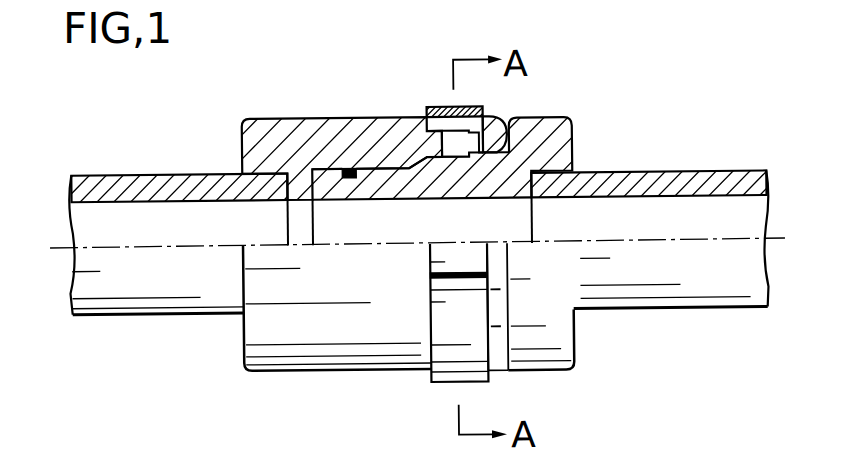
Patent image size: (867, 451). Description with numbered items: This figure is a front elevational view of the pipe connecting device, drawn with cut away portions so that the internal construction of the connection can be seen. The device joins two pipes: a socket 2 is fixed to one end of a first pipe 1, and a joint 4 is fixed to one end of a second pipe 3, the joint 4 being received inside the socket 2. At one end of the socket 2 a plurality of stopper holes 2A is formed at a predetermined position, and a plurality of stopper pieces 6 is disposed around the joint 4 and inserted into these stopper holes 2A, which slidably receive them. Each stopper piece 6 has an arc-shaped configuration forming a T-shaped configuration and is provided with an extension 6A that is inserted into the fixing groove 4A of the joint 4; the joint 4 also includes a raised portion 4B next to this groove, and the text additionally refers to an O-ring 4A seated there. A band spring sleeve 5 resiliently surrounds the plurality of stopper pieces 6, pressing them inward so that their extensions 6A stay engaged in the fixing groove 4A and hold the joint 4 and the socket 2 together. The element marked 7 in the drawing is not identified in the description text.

The first pipe 1 is at (158, 182).
The socket 2 is at (265, 135).
The stopper holes 2A is at (495, 106).
The second pipe 3 is at (715, 183).
The joint 4 is at (553, 134).
The fixing groove 4A is at (573, 156).
The raised portion 4B is at (433, 140).
The band spring sleeve 5 is at (443, 110).
The stopper pieces 6 is at (443, 123).
The extension 6A is at (448, 147).
The seal ring 7 is at (347, 166).